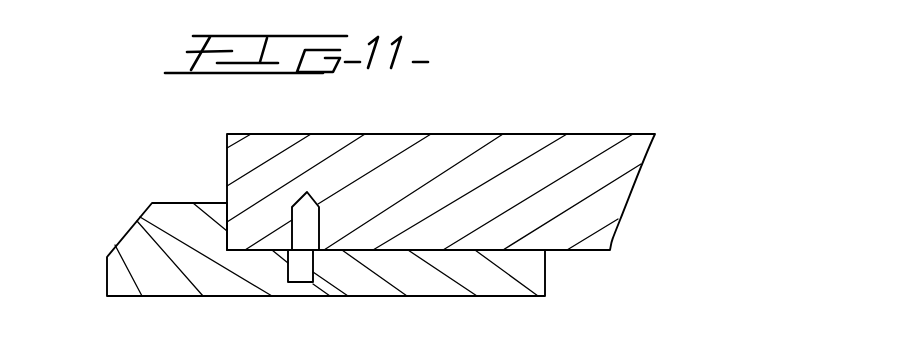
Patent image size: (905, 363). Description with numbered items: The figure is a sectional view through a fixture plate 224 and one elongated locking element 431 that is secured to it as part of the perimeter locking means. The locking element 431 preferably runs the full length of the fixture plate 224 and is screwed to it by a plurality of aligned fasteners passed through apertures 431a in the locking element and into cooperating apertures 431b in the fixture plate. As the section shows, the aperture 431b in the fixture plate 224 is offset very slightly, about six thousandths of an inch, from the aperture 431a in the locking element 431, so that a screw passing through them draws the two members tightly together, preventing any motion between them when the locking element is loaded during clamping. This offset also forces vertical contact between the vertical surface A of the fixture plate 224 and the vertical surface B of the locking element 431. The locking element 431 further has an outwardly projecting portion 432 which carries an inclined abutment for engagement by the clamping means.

The fixture plate 224 is at (259, 148).
The elongated locking element 431 is at (360, 272).
The aperture in the locking element 431a is at (297, 264).
The aperture in the fixture plate 431b is at (314, 221).
The outwardly projecting portion 432 is at (128, 264).
The vertical surface of the fixture plate A is at (238, 228).
The vertical surface of the locking element B is at (228, 238).